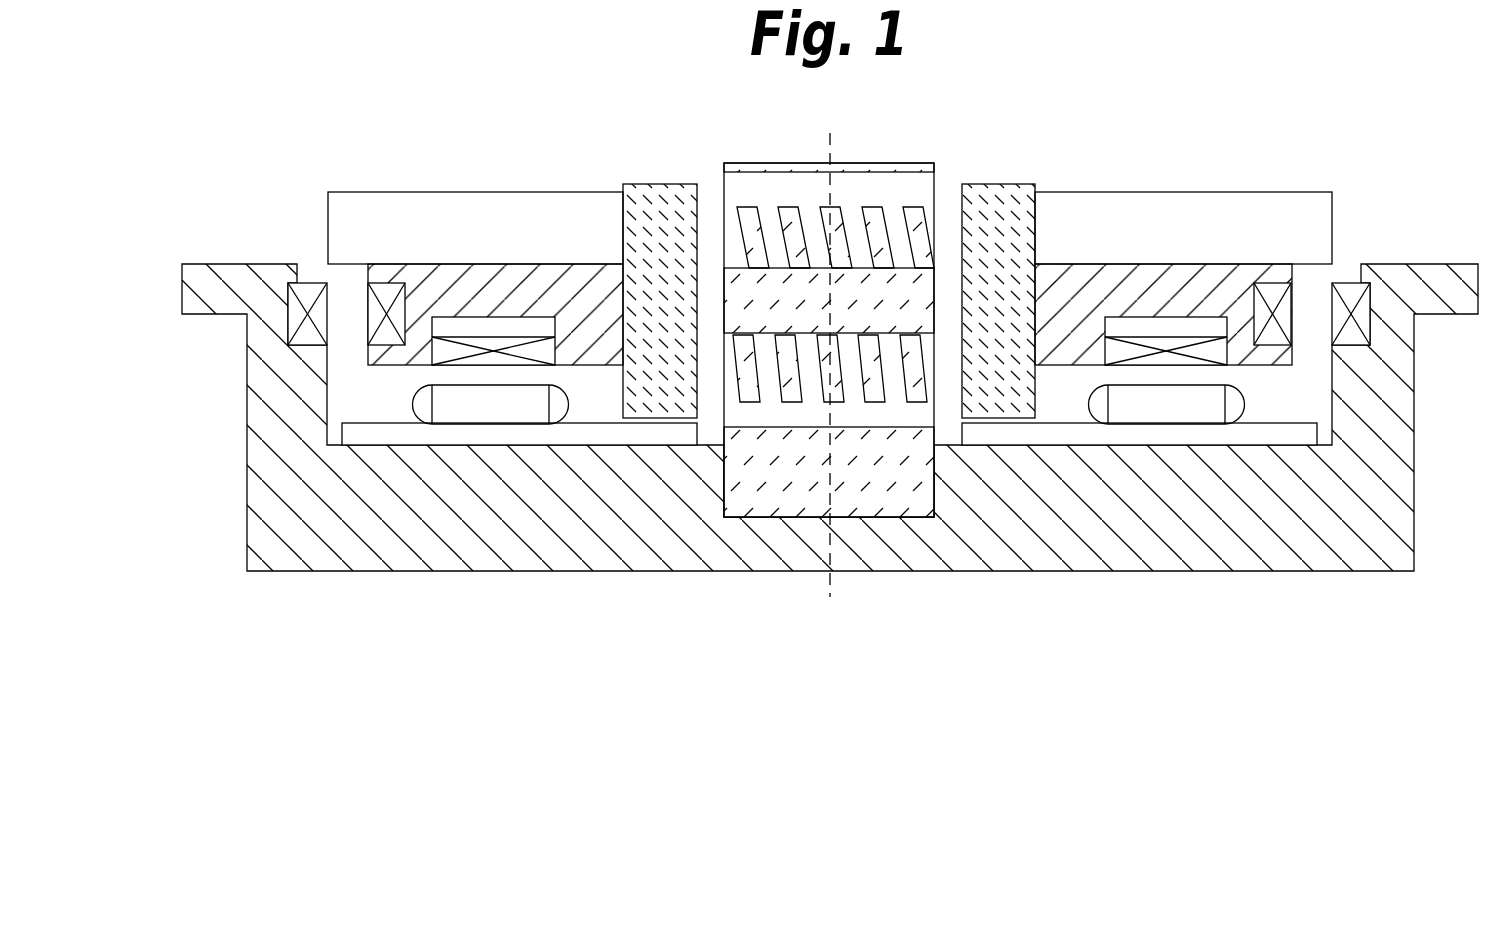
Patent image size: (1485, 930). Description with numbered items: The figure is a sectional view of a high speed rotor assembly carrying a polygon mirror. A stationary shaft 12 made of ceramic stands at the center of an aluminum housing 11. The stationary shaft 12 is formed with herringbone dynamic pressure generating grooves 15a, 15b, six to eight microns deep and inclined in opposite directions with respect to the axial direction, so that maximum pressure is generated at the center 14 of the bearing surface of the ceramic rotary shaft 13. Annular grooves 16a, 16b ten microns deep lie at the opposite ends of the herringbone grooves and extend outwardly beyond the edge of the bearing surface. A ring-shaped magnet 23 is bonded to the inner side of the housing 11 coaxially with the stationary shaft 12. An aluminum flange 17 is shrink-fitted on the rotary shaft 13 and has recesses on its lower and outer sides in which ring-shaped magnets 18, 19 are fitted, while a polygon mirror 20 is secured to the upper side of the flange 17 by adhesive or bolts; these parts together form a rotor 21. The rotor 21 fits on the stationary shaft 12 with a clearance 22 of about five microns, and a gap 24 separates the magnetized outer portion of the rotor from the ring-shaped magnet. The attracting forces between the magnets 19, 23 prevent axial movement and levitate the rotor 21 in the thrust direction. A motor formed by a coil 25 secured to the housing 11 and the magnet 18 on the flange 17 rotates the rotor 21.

The housing 11 is at (512, 569).
The stationary shaft 12 is at (795, 518).
The rotary shaft 13 is at (1016, 185).
The center of bearing surface 14 is at (945, 295).
The herringbone dynamic pressure generating groove 15a is at (918, 388).
The herringbone dynamic pressure generating groove 15b is at (920, 245).
The annular groove 16a is at (755, 428).
The annular groove 16b is at (762, 173).
The flange 17 is at (378, 366).
The ring-shaped magnet 18 is at (1224, 350).
The ring-shaped magnet 19 is at (382, 337).
The polygon mirror 20 is at (478, 200).
The rotor 21 is at (338, 159).
The clearance 22 is at (713, 197).
The ring-shaped magnet 23 is at (305, 338).
The gap 24 is at (340, 290).
The coil 25 is at (1167, 415).